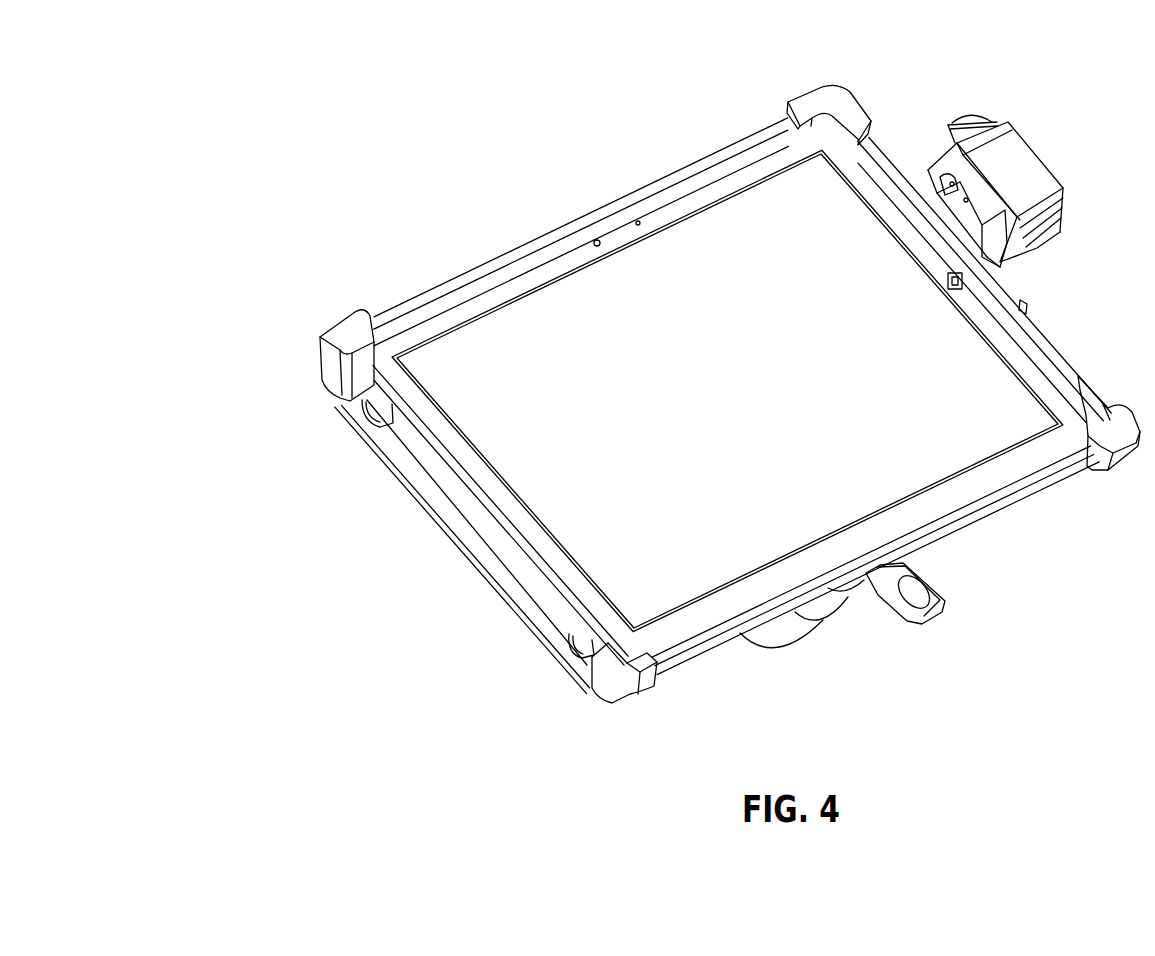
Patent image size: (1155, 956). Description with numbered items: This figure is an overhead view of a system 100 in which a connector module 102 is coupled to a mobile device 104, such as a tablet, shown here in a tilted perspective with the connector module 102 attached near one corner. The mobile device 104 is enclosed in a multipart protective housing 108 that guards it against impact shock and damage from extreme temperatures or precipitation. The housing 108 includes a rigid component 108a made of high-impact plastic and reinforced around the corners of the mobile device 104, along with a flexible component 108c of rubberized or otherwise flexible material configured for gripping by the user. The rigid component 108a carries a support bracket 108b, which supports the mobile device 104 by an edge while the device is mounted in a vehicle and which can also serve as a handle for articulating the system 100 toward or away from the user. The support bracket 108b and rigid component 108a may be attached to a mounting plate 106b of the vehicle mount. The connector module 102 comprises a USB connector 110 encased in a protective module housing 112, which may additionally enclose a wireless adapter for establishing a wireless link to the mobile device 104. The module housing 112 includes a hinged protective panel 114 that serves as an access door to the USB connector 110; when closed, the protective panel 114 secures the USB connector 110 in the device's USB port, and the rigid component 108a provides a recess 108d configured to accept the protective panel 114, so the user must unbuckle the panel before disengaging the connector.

The system 100 is at (331, 101).
The connector module 102 is at (1050, 60).
The mobile device 104 is at (583, 293).
The mounting plate 106b is at (525, 592).
The protective housing 108 is at (1047, 343).
The rigid component 108a is at (340, 325).
The support bracket 108b is at (880, 612).
The flexible component 108c is at (395, 417).
The recess 108d is at (897, 208).
The USB connector 110 is at (947, 178).
The module housing 112 is at (977, 118).
The protective panel 114 is at (1037, 177).